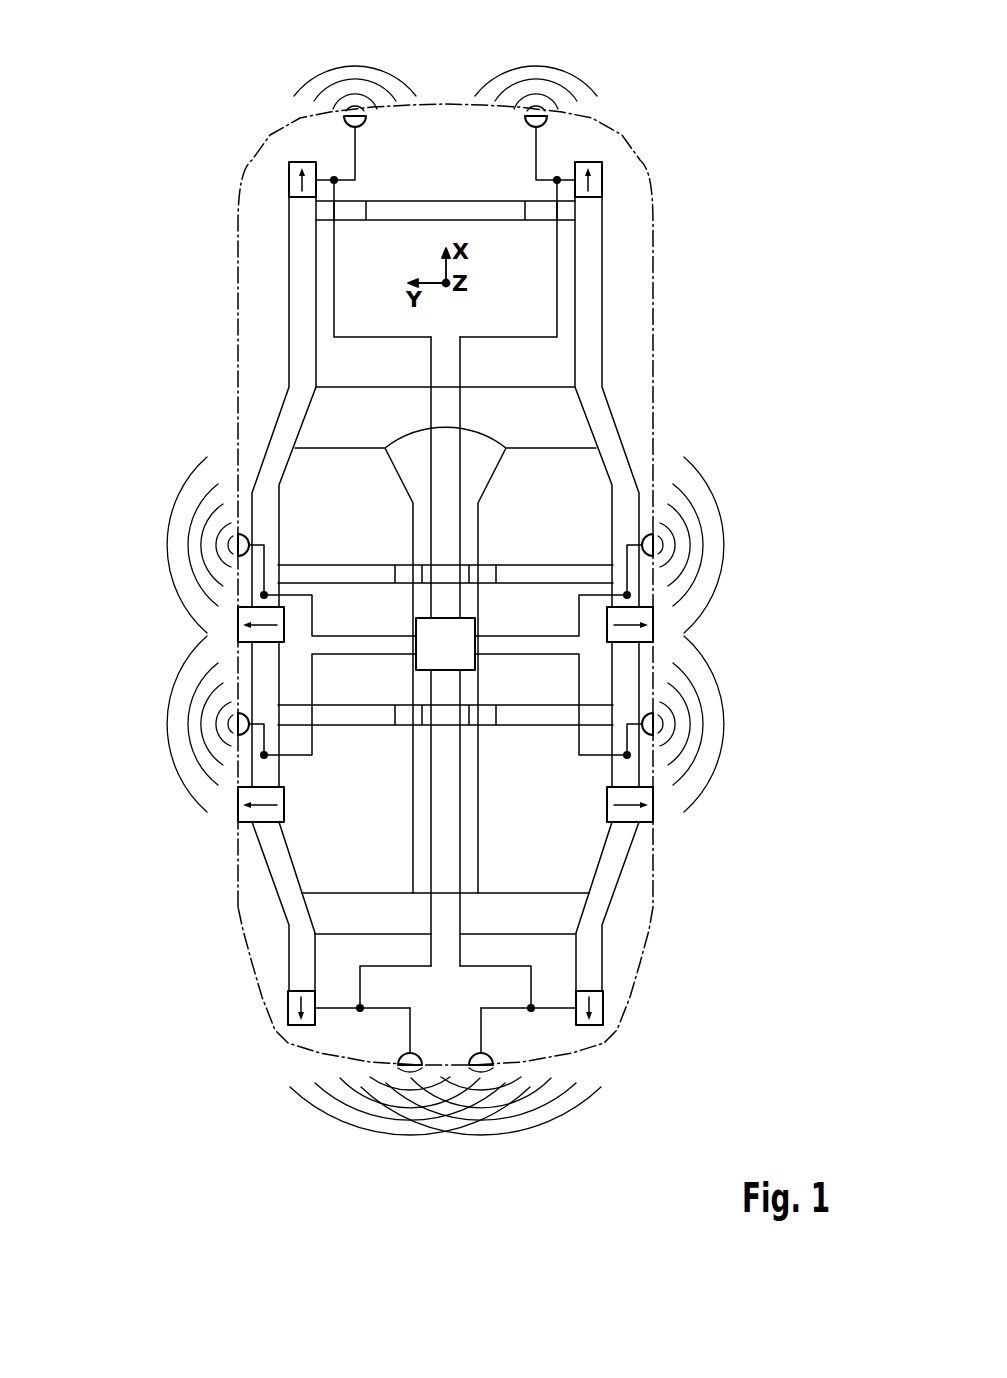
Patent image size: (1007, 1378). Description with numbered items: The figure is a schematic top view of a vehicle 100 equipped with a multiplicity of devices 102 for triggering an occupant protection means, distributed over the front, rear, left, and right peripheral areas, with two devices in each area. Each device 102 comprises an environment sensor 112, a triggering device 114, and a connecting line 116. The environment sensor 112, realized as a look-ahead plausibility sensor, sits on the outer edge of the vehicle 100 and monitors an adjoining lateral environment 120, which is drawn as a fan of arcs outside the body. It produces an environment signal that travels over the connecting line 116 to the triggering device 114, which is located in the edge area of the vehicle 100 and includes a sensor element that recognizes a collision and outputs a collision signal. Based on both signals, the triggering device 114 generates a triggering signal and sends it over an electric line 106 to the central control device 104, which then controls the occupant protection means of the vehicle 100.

The vehicle 100 is at (653, 325).
The device for triggering an occupant protection means 102 is at (232, 113).
The control device 104 is at (475, 662).
The electric line 106 is at (334, 258).
The environment sensor 112 is at (343, 122).
The triggering device 114 is at (289, 180).
The connecting line 116 is at (343, 180).
The lateral environment 120 is at (327, 70).